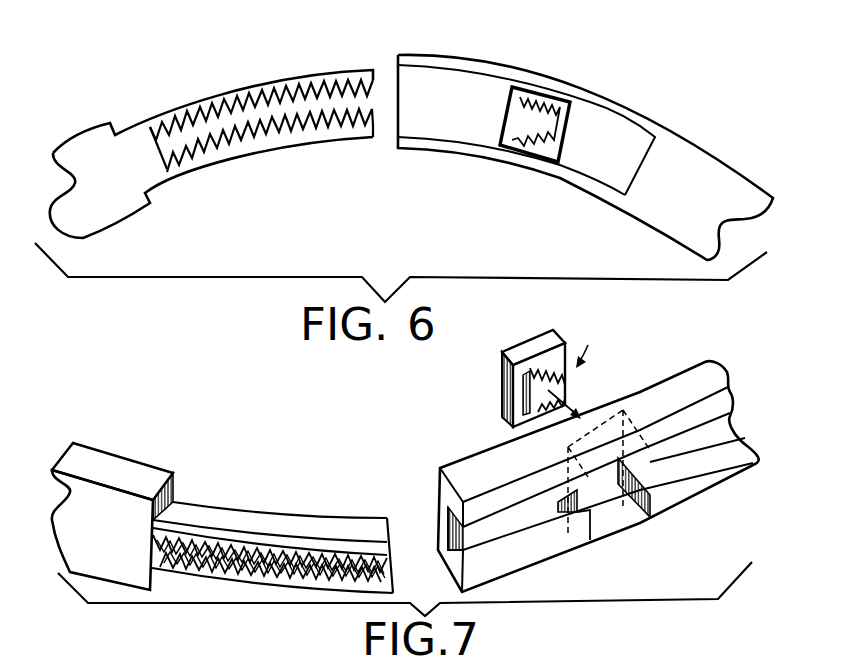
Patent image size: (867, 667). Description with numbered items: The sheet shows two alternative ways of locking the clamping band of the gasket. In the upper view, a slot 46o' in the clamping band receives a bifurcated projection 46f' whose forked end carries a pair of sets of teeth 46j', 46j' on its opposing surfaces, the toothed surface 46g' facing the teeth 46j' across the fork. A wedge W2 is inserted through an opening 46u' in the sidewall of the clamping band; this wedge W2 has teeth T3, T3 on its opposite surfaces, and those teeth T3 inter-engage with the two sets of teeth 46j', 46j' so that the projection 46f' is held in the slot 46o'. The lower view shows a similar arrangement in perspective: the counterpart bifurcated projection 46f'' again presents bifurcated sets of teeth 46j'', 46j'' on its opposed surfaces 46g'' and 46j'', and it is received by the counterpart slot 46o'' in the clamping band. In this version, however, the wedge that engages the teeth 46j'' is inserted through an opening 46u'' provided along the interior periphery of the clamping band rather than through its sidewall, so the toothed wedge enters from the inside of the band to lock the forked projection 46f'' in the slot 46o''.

In FIG. 6, the bifurcated projection 46f' is at (211, 133).
In FIG. 6, the upper serrations of slot 46g' is at (261, 89).
In FIG. 6, the teeth 46j' is at (270, 149).
In FIG. 6, the slot 46o' is at (585, 157).
In FIG. 6, the opening 46u' is at (544, 99).
In FIG. 7, the curved spring arm segment with three-dimensional teeth 46f'' is at (222, 518).
In FIG. 7, the upper row of teeth 46g'' is at (281, 530).
In FIG. 7, the bifurcated sets of teeth 46j'' is at (272, 527).
In FIG. 7, the stepped mating rail segment 46o'' is at (598, 476).
In FIG. 7, the transverse slot in rail 46u'' is at (615, 447).
In FIG. 7, the teeth T3 is at (499, 440).
In FIG. 7, the wedge W2 is at (576, 371).